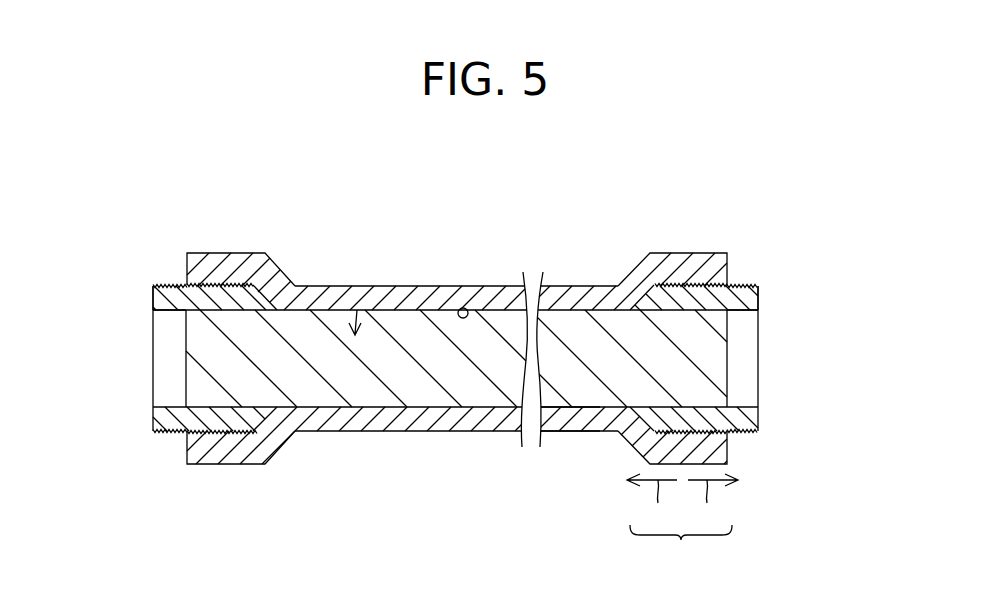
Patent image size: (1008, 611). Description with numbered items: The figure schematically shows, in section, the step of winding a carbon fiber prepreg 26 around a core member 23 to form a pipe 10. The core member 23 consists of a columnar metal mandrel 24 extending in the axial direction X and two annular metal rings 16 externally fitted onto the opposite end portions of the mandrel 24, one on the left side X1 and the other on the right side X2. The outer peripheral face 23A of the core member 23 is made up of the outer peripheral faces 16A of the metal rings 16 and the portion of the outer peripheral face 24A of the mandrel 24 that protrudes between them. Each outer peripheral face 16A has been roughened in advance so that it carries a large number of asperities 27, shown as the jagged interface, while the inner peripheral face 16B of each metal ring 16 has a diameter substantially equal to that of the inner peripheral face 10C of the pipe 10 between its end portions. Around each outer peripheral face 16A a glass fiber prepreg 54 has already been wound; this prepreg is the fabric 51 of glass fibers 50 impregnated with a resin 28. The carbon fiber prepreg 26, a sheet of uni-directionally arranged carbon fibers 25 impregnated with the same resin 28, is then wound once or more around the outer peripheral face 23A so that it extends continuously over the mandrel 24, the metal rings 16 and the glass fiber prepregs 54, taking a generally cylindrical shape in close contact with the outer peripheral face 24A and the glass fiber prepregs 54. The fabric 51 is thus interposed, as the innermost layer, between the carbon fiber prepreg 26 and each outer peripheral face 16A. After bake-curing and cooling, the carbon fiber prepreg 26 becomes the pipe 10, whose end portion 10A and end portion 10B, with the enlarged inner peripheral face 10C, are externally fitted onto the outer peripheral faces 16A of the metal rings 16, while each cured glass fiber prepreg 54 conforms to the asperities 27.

The pipe 10 is at (457, 347).
The end portion 10A is at (237, 263).
The end portion 10B is at (687, 264).
The inner peripheral face 10C is at (468, 307).
The metal ring 16 is at (457, 343).
The outer peripheral face 16A is at (178, 284).
The inner peripheral face 16B is at (175, 313).
The core member 23 is at (364, 302).
The outer peripheral face 23A is at (516, 290).
The mandrel 24 is at (429, 333).
The outer peripheral face 24A is at (576, 308).
The carbon fibers 25 is at (341, 264).
The carbon fiber prepreg 26 is at (357, 310).
The asperities 27 is at (178, 287).
The resin 28 is at (210, 284).
The glass fibers 50 is at (457, 309).
The glass fiber prepreg 54 is at (216, 284).
The fabric 51 is at (228, 440).
The axial direction X is at (682, 519).
The left side X1 is at (652, 502).
The right side X2 is at (713, 502).